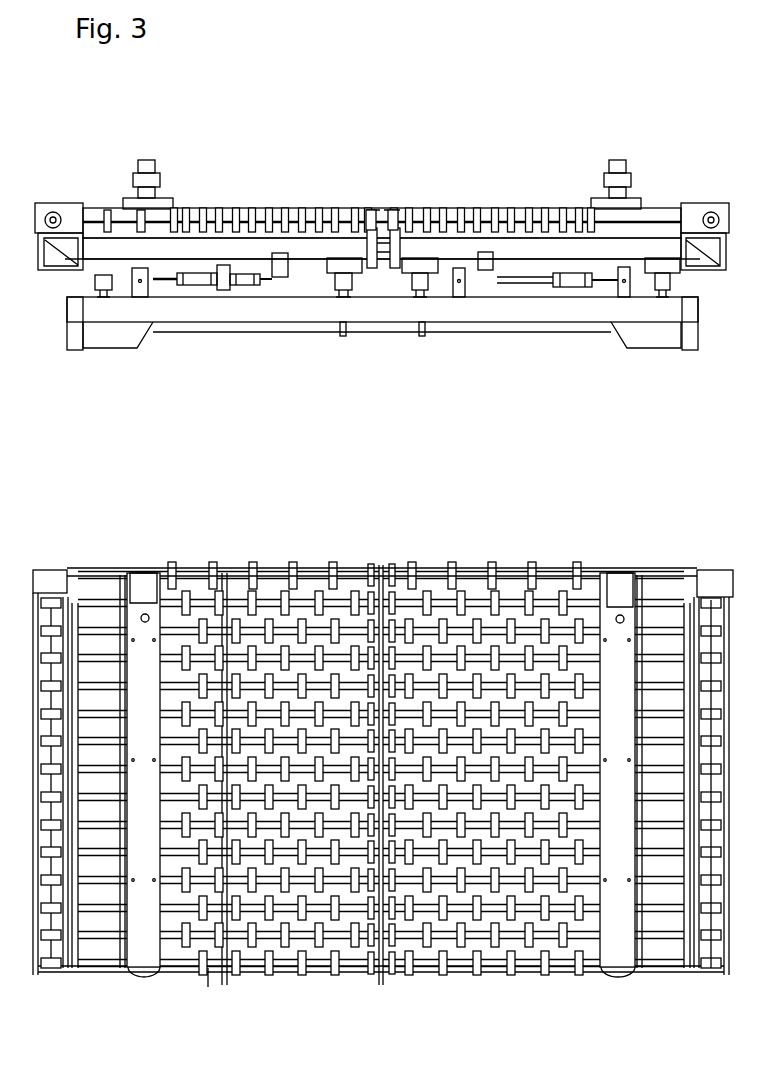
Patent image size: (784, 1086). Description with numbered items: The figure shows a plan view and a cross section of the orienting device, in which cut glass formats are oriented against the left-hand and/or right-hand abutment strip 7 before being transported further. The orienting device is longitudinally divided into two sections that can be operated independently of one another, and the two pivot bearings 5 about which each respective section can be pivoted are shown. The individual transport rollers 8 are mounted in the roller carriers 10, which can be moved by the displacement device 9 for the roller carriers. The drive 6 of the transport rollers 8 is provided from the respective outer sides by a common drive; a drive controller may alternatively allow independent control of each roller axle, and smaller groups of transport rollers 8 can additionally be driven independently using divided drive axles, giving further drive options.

The pivot bearing for roller carriers 5 is at (537, 262).
The drive of transport rollers 6 is at (47, 970).
The abutment strip 7 is at (140, 570).
The transport rollers 8 is at (282, 938).
The displacement device for roller carriers 9 is at (263, 237).
The frame roller carriers 10 is at (297, 248).